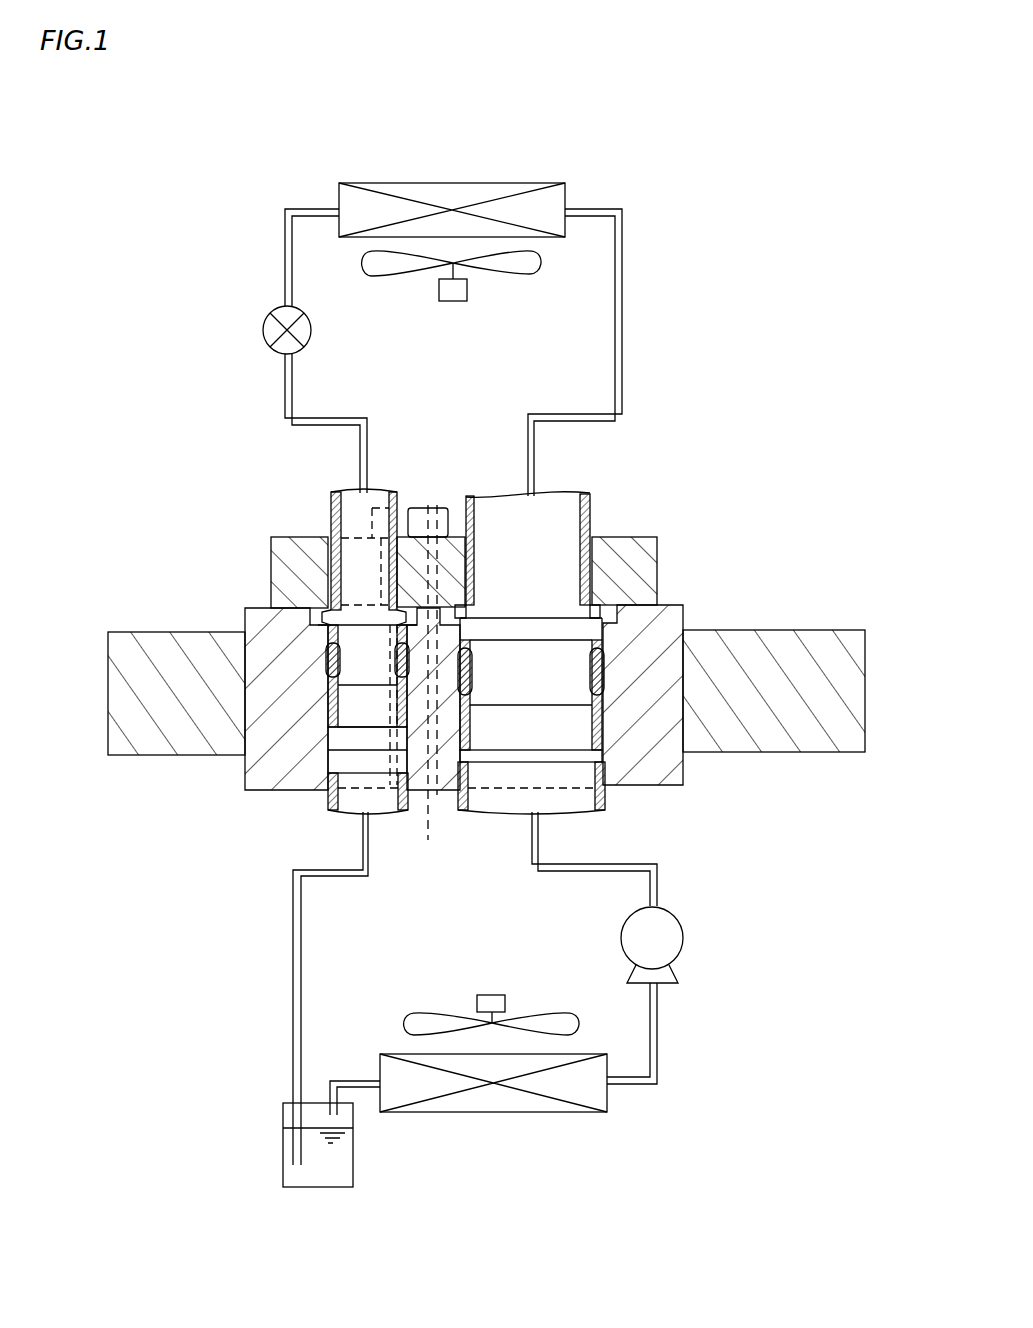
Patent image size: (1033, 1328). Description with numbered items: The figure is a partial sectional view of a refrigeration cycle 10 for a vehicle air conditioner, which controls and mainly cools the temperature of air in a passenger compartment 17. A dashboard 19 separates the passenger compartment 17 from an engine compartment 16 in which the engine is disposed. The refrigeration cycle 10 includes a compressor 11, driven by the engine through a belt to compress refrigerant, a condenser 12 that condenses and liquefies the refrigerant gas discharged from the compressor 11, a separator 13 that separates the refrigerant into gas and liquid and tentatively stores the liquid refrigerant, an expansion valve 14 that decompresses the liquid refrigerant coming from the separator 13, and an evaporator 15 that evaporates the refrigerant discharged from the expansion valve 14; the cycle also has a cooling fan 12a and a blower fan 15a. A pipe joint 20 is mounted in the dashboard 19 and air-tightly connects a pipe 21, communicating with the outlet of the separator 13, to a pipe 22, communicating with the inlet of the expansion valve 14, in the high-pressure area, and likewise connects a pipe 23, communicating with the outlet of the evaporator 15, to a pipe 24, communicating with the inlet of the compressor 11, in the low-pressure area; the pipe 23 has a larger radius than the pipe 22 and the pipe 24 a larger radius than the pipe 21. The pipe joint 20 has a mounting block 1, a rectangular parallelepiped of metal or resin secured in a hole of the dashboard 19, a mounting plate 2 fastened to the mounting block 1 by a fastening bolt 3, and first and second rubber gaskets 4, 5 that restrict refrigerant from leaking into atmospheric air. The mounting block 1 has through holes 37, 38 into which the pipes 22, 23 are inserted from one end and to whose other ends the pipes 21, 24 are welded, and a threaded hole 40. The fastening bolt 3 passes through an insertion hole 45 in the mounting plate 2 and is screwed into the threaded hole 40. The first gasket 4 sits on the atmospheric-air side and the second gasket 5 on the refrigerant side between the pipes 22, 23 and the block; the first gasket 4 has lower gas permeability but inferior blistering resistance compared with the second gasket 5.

The mounting block 1 is at (257, 772).
The mounting plate 2 is at (280, 560).
The fastening bolt 3 is at (428, 505).
The first rubber gasket 4 is at (330, 655).
The second rubber gasket 5 is at (330, 680).
The refrigeration cycle 10 is at (233, 217).
The compressor 11 is at (668, 945).
The condenser 12 is at (510, 1100).
The cooling fan 12a is at (425, 1020).
The separator 13 is at (290, 1160).
The expansion valve 14 is at (270, 333).
The evaporator 15 is at (428, 195).
The blower fan 15a is at (516, 265).
The engine compartment 16 is at (779, 874).
The passenger compartment 17 is at (790, 534).
The dashboard 19 is at (815, 640).
The pipe joint 20 is at (648, 517).
The pipe 21 is at (325, 810).
The pipe 22 is at (330, 500).
The pipe 23 is at (590, 492).
The pipe 24 is at (607, 800).
The through hole 37 is at (340, 753).
The through hole 38 is at (500, 756).
The threaded hole 40 is at (430, 688).
The insertion hole 45 is at (447, 507).